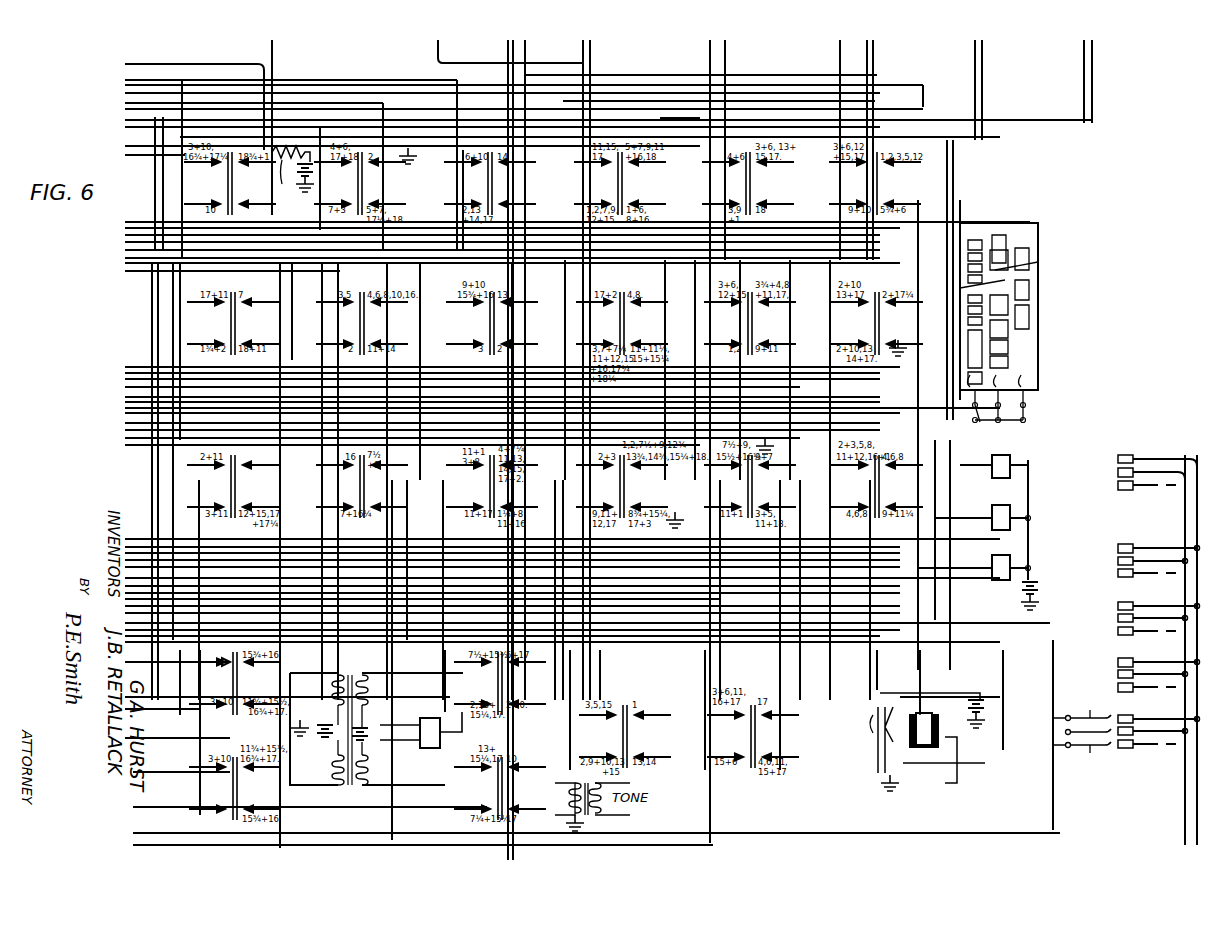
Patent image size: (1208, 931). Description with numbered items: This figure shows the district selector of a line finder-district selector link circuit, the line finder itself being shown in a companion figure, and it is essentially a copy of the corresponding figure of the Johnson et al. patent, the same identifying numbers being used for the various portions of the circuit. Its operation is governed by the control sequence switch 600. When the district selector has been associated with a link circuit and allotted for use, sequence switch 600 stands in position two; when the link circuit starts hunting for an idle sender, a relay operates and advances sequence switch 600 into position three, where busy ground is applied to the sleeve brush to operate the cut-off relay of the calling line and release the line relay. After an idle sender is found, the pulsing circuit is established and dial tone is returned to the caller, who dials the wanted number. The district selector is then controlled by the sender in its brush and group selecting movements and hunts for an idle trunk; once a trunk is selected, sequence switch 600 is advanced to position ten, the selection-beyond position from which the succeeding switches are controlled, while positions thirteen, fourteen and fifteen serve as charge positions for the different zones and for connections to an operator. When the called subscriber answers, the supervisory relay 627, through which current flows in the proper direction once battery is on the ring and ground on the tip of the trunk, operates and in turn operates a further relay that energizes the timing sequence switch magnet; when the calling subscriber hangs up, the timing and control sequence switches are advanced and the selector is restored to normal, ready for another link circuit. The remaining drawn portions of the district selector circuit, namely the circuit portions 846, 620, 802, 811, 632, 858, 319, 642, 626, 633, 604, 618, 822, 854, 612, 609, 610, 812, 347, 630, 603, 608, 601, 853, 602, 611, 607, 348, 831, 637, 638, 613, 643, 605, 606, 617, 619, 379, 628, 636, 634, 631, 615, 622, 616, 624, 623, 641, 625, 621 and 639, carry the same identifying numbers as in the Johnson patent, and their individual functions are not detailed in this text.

The conductor 846 is at (275, 66).
The conductors 620 is at (450, 65).
The conductors 802 is at (674, 74).
The conductors 811 is at (727, 65).
The conductors 632 is at (876, 65).
The conductors 858 is at (1094, 65).
The conductors 319 is at (973, 92).
The conductor 642 is at (664, 128).
The relay 626 is at (233, 183).
The resistor and battery 633 is at (293, 186).
The relay 604 is at (363, 183).
The relay 618 is at (488, 192).
The conductor 822 is at (520, 160).
The conductor 854 is at (520, 205).
The relay 612 is at (623, 183).
The relay 609 is at (751, 183).
The relay 610 is at (878, 183).
The conductors 812 is at (956, 180).
The conductor 347 is at (860, 240).
The conductor 630 is at (230, 271).
The relay 603 is at (236, 322).
The relay 608 is at (365, 322).
The relay 601 is at (489, 322).
The conductor 853 is at (578, 322).
The relay 602 is at (625, 322).
The relay 611 is at (753, 322).
The relay 607 is at (874, 322).
The conductor 348 is at (550, 357).
The conductor 831 is at (455, 392).
The stepping switch 637 is at (957, 379).
The switch contacts 638 is at (978, 424).
The relay 613 is at (236, 488).
The relay 643 is at (365, 488).
The relay 605 is at (489, 488).
The relay 606 is at (625, 488).
The relay 617 is at (747, 488).
The relay 619 is at (874, 488).
The conductor 379 is at (460, 566).
The conductor 628 is at (704, 599).
The relay windings 636 is at (995, 566).
The conductor 634 is at (140, 650).
The transformer 631 is at (356, 676).
The relay 615 is at (238, 682).
The relay 622 is at (503, 682).
The relay 616 is at (238, 790).
The relay 624 is at (503, 790).
The relay 623 is at (628, 735).
The relay 641 is at (750, 735).
The sequence switch 600 is at (925, 697).
The switch 625 is at (1065, 732).
The switch contact 621 is at (1091, 704).
The switch contact 639 is at (1091, 760).
The supervisory relay 627 is at (393, 820).